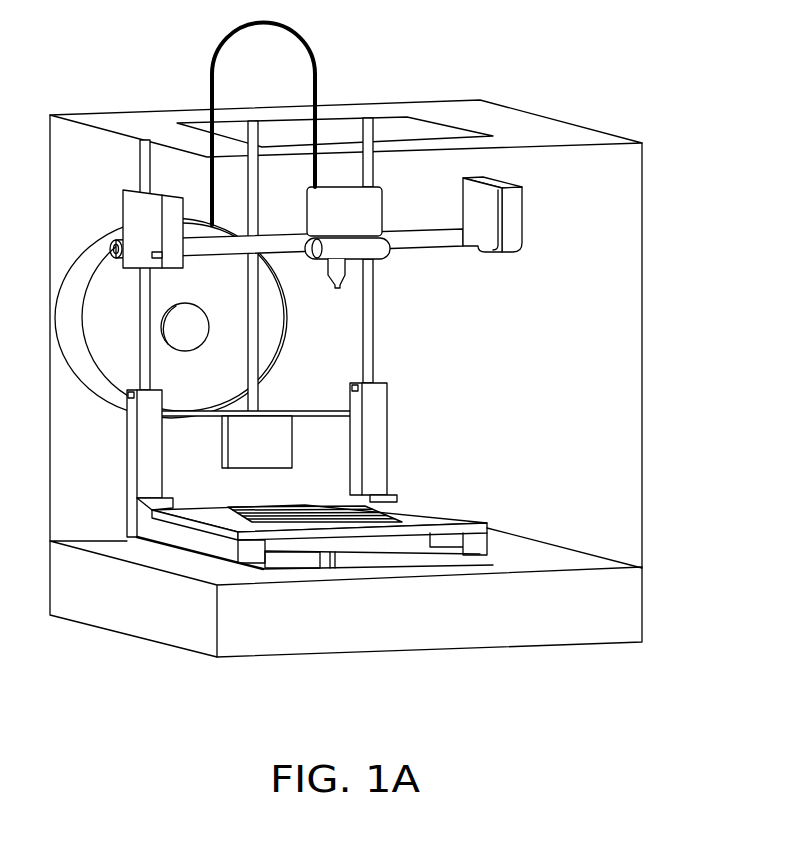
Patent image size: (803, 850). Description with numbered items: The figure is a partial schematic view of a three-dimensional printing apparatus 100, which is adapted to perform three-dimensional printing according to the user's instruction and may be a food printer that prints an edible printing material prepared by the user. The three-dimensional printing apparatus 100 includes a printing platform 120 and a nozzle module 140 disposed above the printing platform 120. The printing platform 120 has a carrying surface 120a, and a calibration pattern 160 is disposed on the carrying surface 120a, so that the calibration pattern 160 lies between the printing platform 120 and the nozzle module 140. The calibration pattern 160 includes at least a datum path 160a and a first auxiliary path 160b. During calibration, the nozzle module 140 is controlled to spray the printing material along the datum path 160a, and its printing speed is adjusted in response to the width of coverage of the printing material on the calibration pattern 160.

The three-dimensional printing apparatus 100 is at (385, 361).
The printing platform 120 is at (433, 443).
The carrying surface 120a is at (445, 519).
The nozzle module 140 is at (372, 268).
The calibration pattern 160 is at (468, 429).
The datum path 160a is at (325, 517).
The first auxiliary path 160b is at (337, 518).